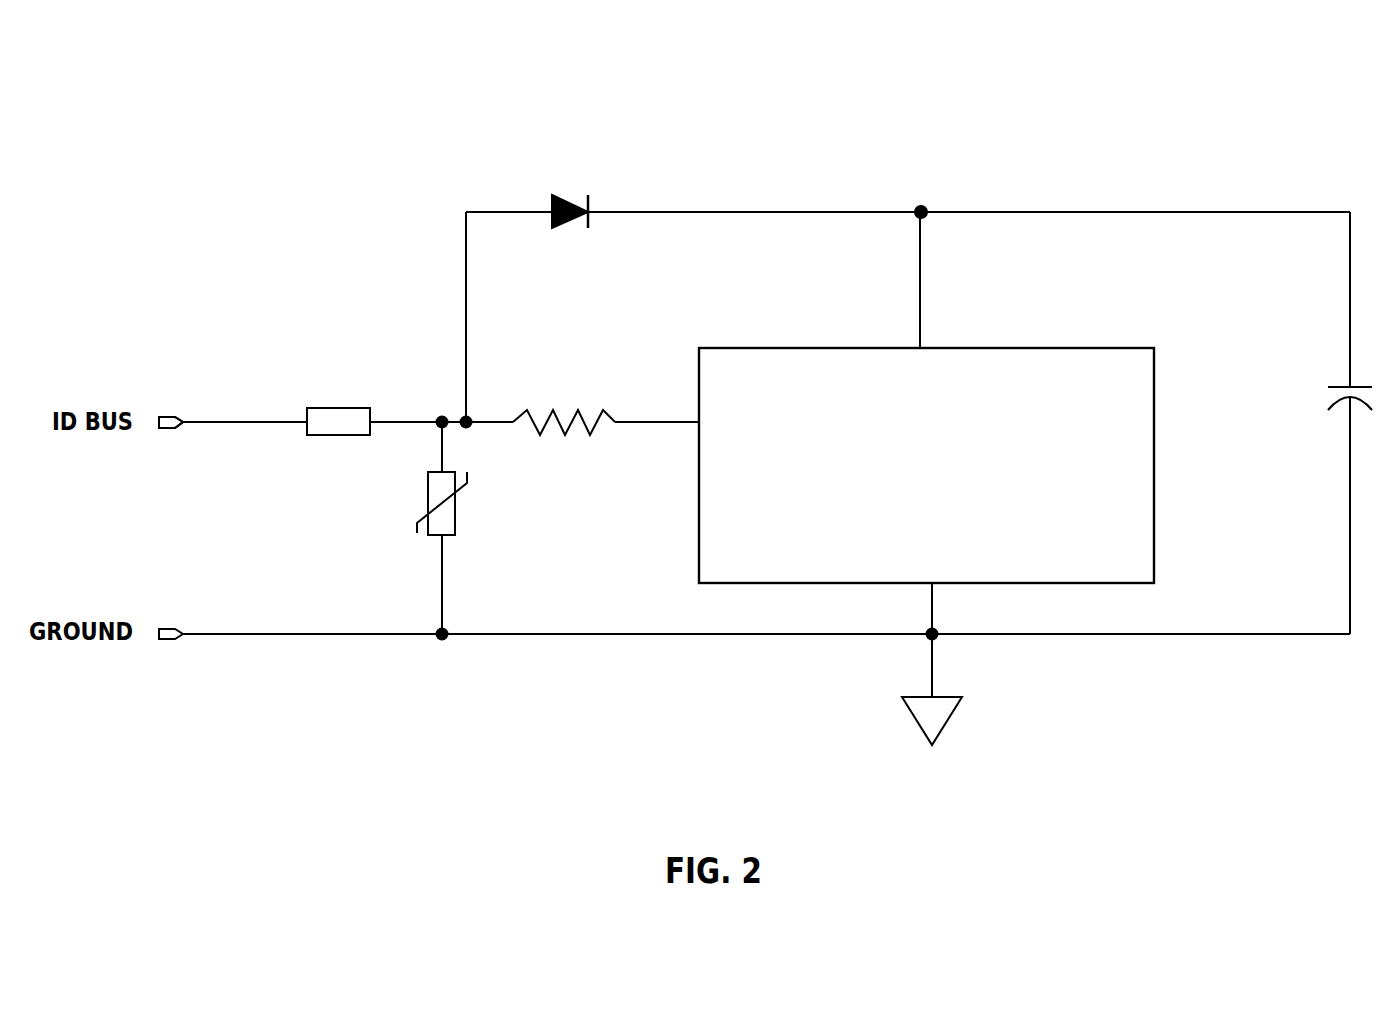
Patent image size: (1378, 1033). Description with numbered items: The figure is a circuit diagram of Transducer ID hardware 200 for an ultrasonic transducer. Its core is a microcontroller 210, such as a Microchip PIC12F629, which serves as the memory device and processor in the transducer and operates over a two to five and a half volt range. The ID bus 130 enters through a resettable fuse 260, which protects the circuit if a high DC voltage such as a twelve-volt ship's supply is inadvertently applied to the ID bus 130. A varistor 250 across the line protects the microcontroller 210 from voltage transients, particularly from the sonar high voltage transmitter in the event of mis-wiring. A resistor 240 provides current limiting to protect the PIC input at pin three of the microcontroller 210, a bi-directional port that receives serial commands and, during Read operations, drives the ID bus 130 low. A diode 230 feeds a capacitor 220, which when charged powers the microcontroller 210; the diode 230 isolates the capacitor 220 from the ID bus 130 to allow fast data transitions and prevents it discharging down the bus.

The ID bus 130 is at (110, 400).
The Transducer ID hardware 200 is at (787, 137).
The microcontroller 210 is at (817, 411).
The capacitor 220 is at (1300, 411).
The diode 230 is at (528, 187).
The resistor 240 is at (528, 397).
The varistor 250 is at (407, 508).
The resettable fuse 260 is at (307, 398).